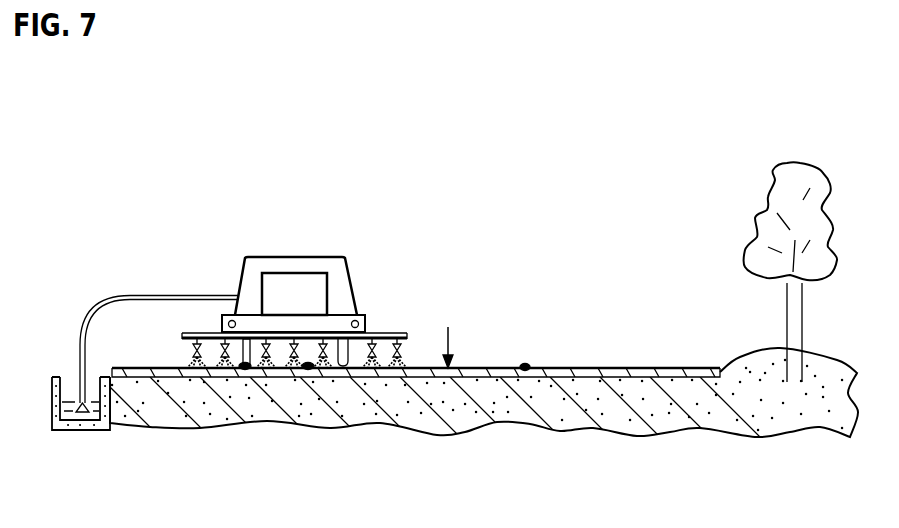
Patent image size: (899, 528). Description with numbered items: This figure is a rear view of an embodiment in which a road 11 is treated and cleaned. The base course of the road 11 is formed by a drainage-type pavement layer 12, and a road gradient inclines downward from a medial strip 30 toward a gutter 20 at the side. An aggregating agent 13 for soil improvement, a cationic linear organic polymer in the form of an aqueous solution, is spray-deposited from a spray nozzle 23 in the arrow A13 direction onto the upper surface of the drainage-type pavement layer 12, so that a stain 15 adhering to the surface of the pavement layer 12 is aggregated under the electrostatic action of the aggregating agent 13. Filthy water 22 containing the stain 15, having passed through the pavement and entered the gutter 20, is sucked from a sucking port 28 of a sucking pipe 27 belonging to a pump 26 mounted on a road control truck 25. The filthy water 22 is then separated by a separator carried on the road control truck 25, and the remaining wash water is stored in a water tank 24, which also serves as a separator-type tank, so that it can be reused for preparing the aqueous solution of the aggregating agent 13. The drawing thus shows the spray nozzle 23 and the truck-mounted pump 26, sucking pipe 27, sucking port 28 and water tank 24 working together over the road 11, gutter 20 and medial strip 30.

The road 11 is at (493, 368).
The drainage-type pavement layer 12 is at (428, 380).
The aggregating agent 13 is at (388, 332).
The arrow A13 direction A13 is at (451, 335).
The stain 15 is at (308, 363).
The gutter 20 is at (53, 400).
The filthy water 22 is at (67, 412).
The spray nozzle 23 is at (185, 345).
The water tank 24 is at (318, 334).
The road control truck 25 is at (221, 323).
The pump 26 is at (245, 262).
The sucking pipe 27 is at (101, 318).
The sucking port 28 is at (82, 414).
The medial strip 30 is at (748, 352).